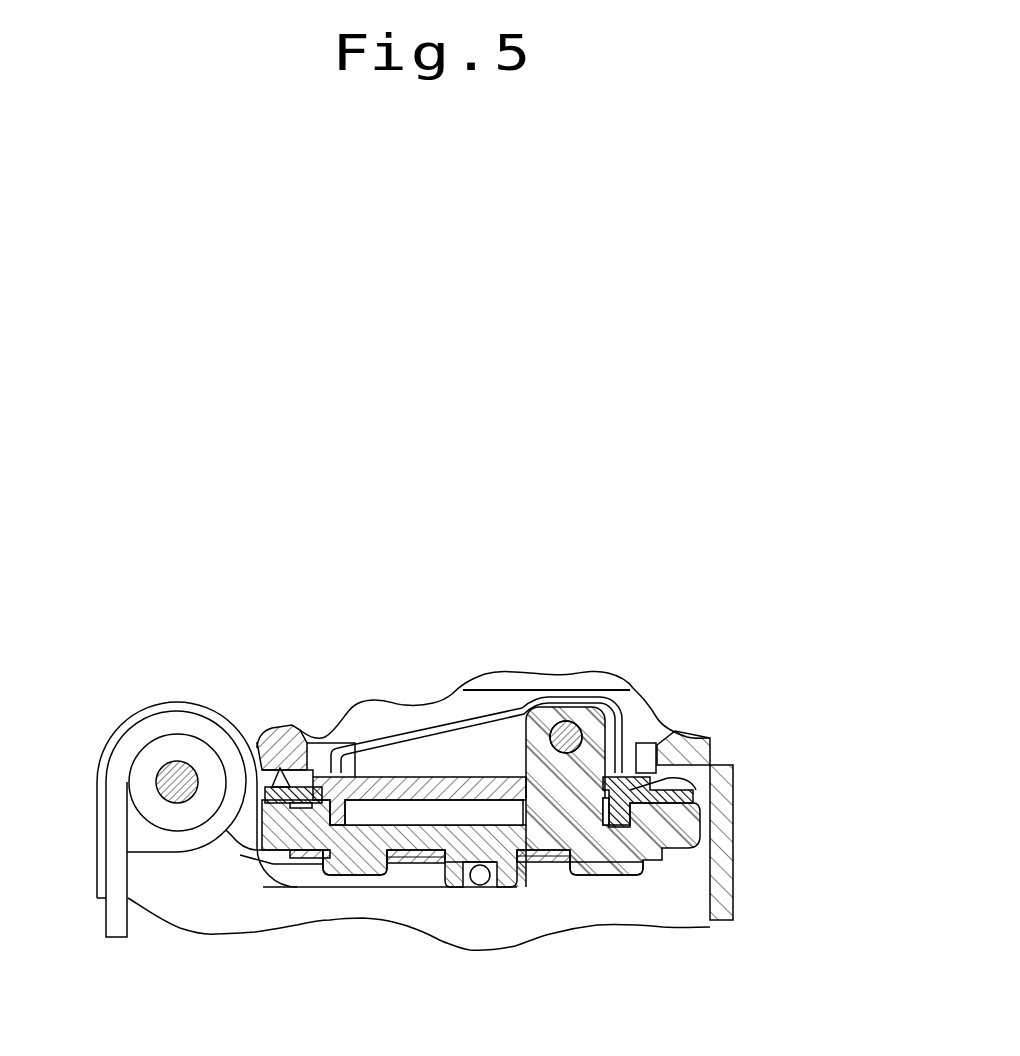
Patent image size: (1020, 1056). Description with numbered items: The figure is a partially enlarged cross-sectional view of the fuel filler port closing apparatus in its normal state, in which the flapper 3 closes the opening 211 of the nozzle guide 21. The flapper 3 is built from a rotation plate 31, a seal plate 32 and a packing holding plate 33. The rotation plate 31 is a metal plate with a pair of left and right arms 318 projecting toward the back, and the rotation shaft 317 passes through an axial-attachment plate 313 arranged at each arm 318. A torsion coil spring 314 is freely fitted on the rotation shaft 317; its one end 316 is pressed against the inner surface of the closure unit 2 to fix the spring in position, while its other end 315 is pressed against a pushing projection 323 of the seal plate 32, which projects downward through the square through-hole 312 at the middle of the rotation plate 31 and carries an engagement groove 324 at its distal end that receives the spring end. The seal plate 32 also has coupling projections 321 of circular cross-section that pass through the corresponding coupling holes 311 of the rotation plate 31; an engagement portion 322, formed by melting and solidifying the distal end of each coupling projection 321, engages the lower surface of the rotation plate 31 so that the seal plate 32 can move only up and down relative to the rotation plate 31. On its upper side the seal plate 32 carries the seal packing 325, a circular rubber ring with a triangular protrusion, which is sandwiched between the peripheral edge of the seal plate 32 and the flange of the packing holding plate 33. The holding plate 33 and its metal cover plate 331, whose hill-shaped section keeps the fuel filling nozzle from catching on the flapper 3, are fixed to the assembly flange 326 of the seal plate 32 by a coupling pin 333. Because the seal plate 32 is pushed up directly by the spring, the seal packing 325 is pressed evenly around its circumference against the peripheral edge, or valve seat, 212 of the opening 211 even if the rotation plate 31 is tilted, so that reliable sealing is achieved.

The closure unit 2 is at (736, 858).
The nozzle guide 21 is at (627, 692).
The opening 211 is at (656, 745).
The peripheral edge (valve seat) 212 is at (690, 733).
The flapper 3 is at (658, 874).
The rotation plate 31 is at (415, 863).
The coupling hole 311 is at (262, 890).
The through-hole 312 is at (533, 890).
The axial-attachment plate 313 is at (158, 748).
The torsion coil spring 314 is at (183, 730).
The other end of torsion coil spring 315 is at (481, 889).
The one end of torsion coil spring 316 is at (113, 930).
The rotation shaft 317 is at (170, 785).
The arm 318 is at (215, 862).
The seal plate 32 is at (692, 822).
The coupling projection 321 is at (352, 876).
The engagement portion 322 is at (300, 858).
The pushing projection 323 is at (440, 889).
The engagement groove 324 is at (495, 889).
The seal packing 325 is at (697, 790).
The assembly flange 326 is at (558, 722).
The packing holding plate 33 is at (500, 778).
The cover plate 331 is at (402, 740).
The coupling pin 333 is at (583, 716).